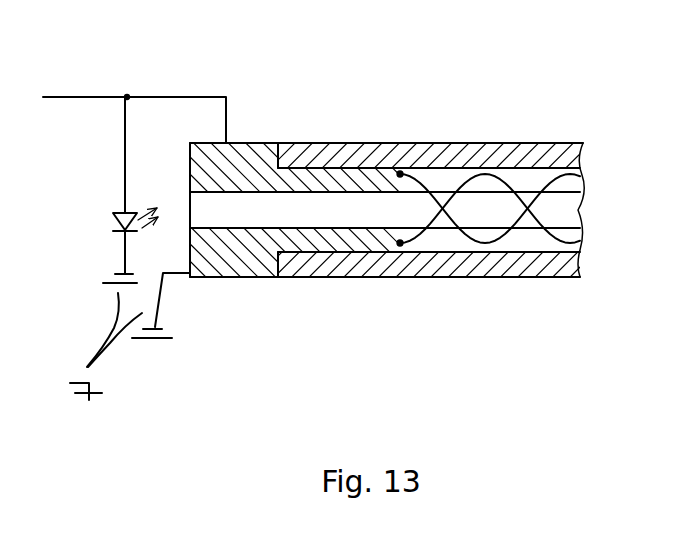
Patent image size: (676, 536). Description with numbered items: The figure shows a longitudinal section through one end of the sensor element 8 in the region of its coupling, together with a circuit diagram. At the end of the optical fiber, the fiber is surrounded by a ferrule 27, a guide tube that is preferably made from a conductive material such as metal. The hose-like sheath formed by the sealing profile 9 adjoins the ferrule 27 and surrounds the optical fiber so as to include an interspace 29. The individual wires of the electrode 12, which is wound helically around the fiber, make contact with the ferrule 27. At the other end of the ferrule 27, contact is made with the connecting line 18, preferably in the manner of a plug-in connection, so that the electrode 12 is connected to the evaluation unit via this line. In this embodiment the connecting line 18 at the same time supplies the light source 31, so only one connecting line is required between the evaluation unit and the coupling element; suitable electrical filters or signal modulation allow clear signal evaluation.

The sensor element 8 is at (338, 202).
The sealing profile 9 is at (512, 143).
The first electrode 12 is at (513, 237).
The connecting line 18 is at (83, 97).
The ferrule 27 is at (217, 258).
The interspace 29 is at (460, 240).
The light source 31 is at (107, 233).